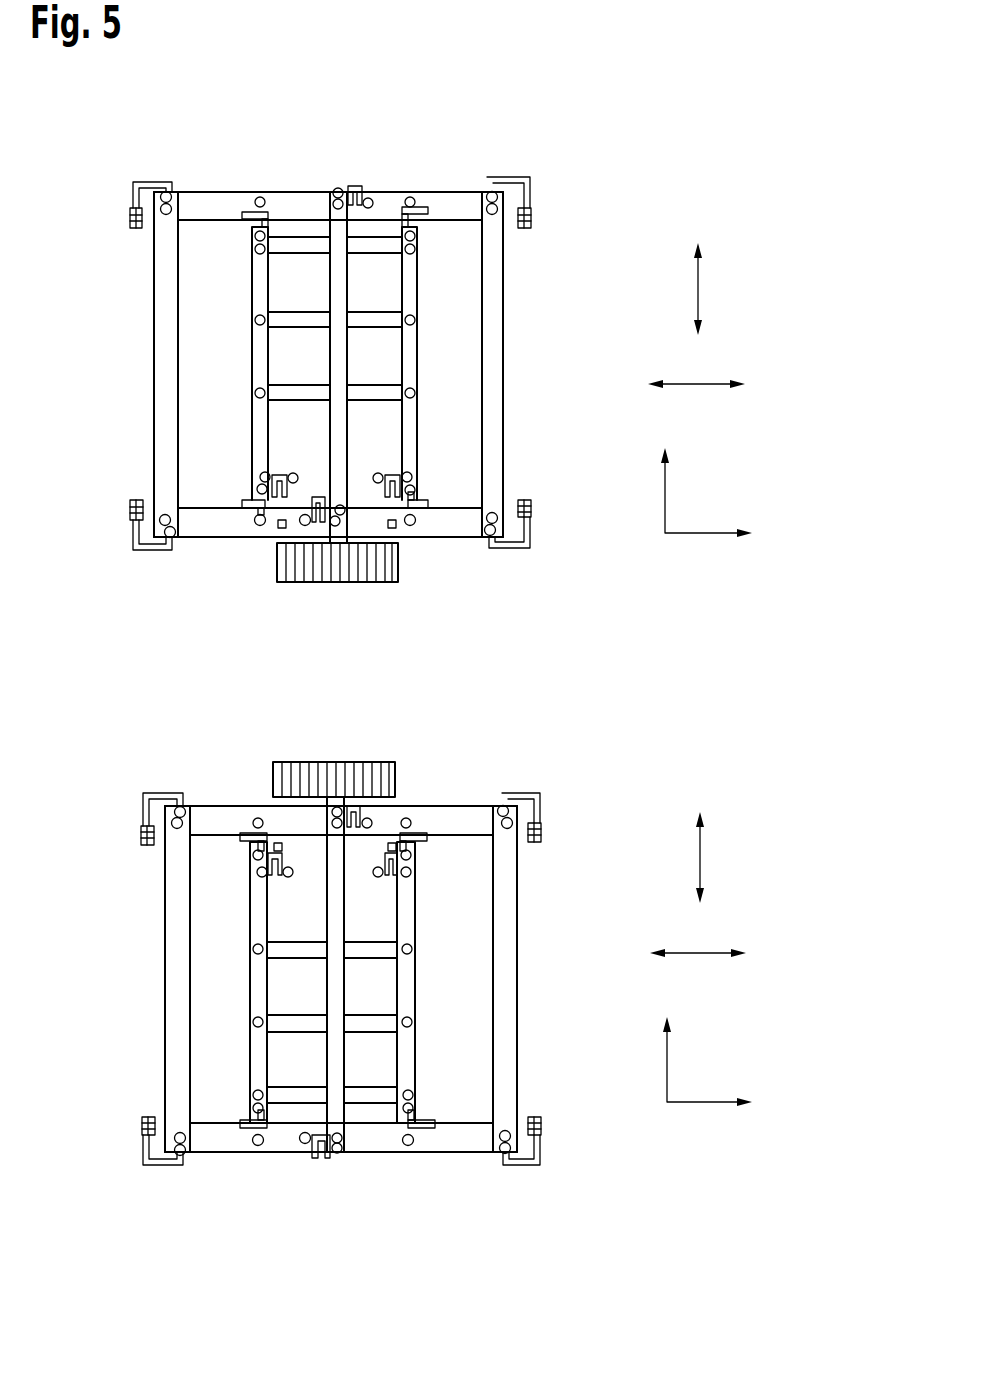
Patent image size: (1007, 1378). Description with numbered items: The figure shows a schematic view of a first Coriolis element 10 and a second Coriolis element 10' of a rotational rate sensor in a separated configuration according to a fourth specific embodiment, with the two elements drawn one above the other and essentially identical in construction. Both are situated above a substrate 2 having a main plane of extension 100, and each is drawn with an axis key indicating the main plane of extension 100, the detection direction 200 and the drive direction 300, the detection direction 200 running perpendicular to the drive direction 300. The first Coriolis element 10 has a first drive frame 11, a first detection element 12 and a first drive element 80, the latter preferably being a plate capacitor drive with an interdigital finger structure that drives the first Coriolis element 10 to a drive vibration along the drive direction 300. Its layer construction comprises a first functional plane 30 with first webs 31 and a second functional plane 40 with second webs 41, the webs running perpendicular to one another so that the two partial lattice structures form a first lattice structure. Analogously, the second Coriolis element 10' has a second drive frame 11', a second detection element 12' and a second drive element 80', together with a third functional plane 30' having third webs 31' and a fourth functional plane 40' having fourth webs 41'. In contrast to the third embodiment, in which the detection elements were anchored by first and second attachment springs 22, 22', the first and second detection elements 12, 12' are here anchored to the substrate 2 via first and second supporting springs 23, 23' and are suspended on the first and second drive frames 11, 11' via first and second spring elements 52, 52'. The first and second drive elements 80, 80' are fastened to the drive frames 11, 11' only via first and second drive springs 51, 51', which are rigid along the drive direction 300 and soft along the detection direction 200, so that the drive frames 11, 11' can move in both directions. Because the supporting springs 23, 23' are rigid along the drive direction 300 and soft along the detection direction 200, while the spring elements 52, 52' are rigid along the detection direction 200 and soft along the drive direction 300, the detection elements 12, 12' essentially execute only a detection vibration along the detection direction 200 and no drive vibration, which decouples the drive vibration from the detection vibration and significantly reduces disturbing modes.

The substrate 2 is at (197, 97).
The first Coriolis element 10 is at (374, 285).
The first drive frame 11 is at (124, 365).
The first detection element 12 is at (184, 363).
The first attachment springs 22 is at (333, 363).
The first supporting springs 23 is at (337, 575).
The first functional plane 30 is at (328, 328).
The first webs 31 is at (335, 351).
The second functional plane 40 is at (527, 365).
The second webs 41 is at (439, 363).
The first drive springs 51 is at (336, 322).
The first spring elements 52 is at (339, 366).
The first drive element 80 is at (337, 608).
The main plane of extension 100 is at (706, 777).
The detection direction 200 is at (697, 687).
The drive direction 300 is at (721, 573).
The second Coriolis element 10' is at (374, 925).
The second drive frame 11' is at (540, 980).
The second detection element 12' is at (492, 982).
The second attachment springs 22' is at (353, 978).
The second supporting springs 23' is at (346, 777).
The third functional plane 30' is at (315, 1012).
The third webs 31' is at (379, 1022).
The fourth functional plane 40' is at (355, 981).
The fourth webs 41' is at (444, 937).
The second drive springs 51' is at (332, 1012).
The second spring elements 52' is at (333, 978).
The second drive element 80' is at (334, 743).